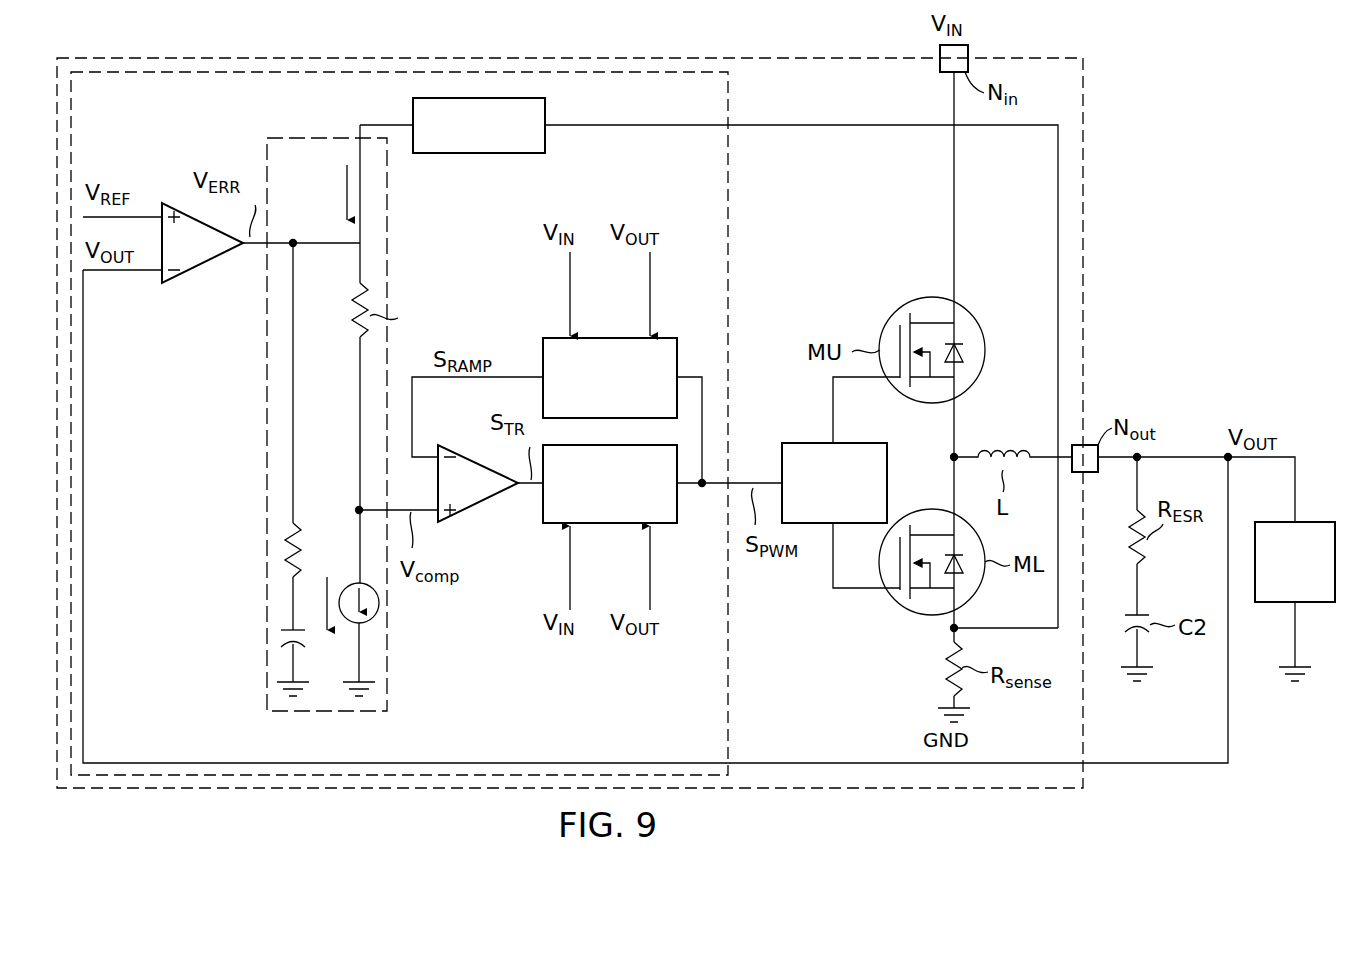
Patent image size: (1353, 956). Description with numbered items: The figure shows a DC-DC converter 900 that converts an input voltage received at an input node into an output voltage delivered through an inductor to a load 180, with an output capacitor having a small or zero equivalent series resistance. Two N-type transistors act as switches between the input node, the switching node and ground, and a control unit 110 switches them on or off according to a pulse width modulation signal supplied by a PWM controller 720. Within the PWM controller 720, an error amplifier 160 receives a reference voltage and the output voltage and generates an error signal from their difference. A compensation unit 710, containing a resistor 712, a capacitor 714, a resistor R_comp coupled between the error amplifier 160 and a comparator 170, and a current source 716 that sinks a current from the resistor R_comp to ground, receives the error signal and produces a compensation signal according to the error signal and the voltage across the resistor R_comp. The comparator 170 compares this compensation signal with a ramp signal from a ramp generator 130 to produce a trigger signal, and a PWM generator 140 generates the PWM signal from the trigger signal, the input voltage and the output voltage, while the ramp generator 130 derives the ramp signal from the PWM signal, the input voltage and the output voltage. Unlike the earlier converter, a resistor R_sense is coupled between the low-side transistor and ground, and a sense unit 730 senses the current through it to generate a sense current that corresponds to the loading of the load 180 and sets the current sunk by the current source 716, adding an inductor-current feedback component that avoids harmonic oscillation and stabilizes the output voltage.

The DC-DC converter 900 is at (489, 57).
The PWM controller 720 is at (730, 668).
The compensation unit 710 is at (311, 137).
The resistor 712 is at (283, 543).
The capacitor 714 is at (281, 636).
The current source 716 is at (380, 603).
The error amplifier 160 is at (207, 265).
The sense unit 730 is at (478, 153).
The ramp generator 130 is at (612, 336).
The PWM generator 140 is at (620, 524).
The comparator 170 is at (482, 505).
The control unit 110 is at (814, 443).
The load 180 is at (1313, 522).